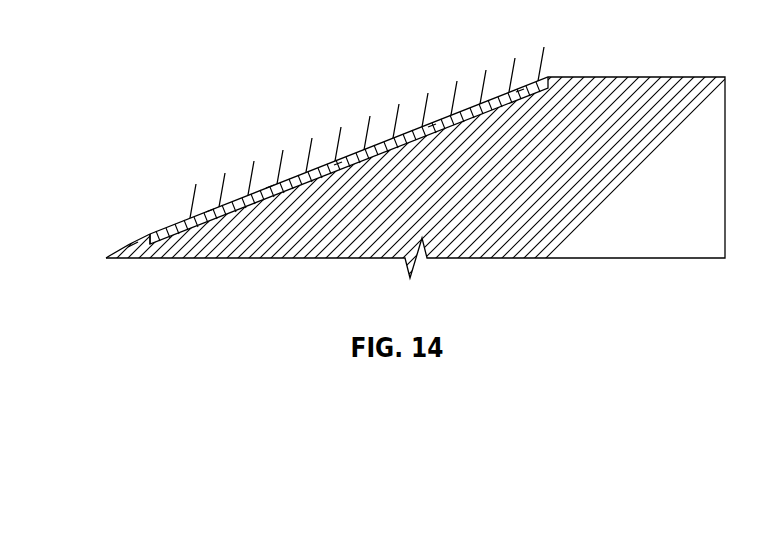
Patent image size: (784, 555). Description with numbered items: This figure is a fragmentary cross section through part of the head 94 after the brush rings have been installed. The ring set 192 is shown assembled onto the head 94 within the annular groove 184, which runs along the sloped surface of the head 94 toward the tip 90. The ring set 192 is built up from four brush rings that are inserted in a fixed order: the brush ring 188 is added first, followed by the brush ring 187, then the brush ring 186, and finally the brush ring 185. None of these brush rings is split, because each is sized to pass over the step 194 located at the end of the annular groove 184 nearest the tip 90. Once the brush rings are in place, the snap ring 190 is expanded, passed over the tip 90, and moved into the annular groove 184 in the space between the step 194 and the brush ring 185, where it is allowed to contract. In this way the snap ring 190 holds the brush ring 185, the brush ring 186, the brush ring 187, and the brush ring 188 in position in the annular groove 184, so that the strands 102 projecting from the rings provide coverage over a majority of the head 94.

The tip 90 is at (106, 258).
The head 94 is at (694, 61).
The strands 102 is at (484, 76).
The annular groove 184 is at (210, 212).
The brush ring 185 is at (270, 187).
The brush ring 186 is at (338, 163).
The brush ring 187 is at (432, 127).
The brush ring 188 is at (520, 90).
The snap ring 190 is at (163, 233).
The ring set 192 is at (377, 98).
The step 194 is at (133, 245).